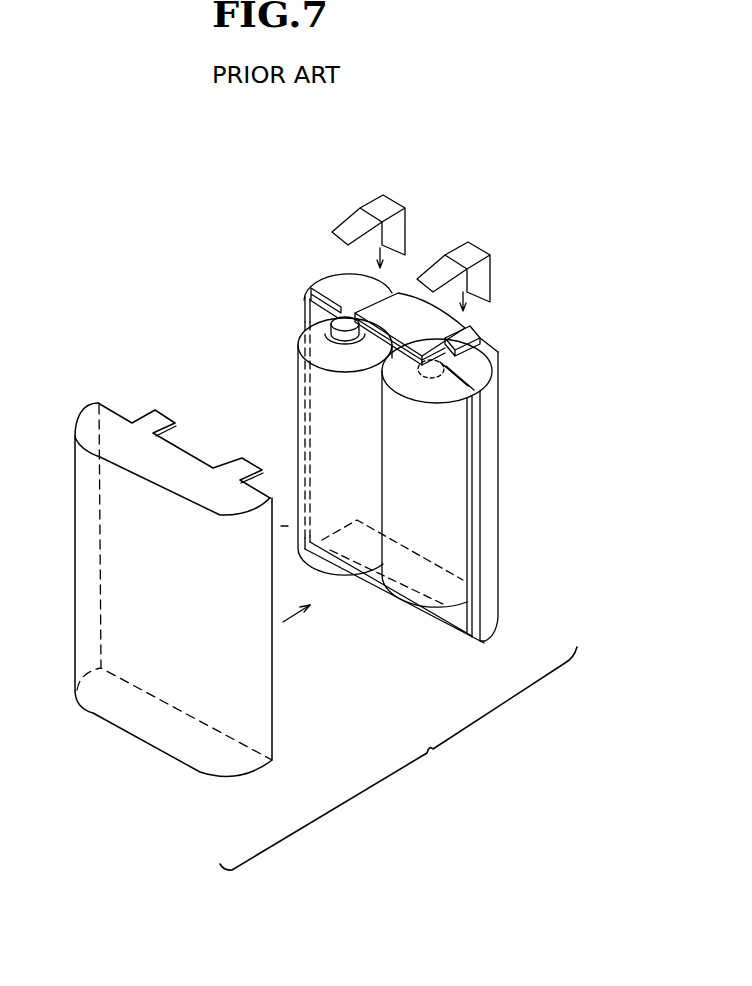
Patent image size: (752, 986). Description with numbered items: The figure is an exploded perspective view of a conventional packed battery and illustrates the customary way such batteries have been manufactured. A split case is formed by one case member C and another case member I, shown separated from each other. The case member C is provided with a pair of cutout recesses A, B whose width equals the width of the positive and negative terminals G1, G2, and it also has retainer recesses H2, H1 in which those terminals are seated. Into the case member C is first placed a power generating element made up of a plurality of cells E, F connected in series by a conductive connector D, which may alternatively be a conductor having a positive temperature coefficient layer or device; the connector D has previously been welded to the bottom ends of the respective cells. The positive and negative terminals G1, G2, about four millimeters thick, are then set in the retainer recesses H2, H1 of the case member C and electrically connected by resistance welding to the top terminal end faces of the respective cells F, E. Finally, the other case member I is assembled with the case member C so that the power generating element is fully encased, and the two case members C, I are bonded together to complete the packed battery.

The positive terminal G1 is at (382, 200).
The negative terminal G2 is at (470, 248).
The cutout recess A is at (350, 297).
The retainer recess H1 is at (385, 297).
The retainer recess H2 is at (468, 342).
The cutout recess B is at (448, 360).
The case member C is at (490, 433).
The conductive connector D is at (378, 582).
The cell E is at (460, 538).
The cell F is at (315, 383).
The case member I is at (153, 733).